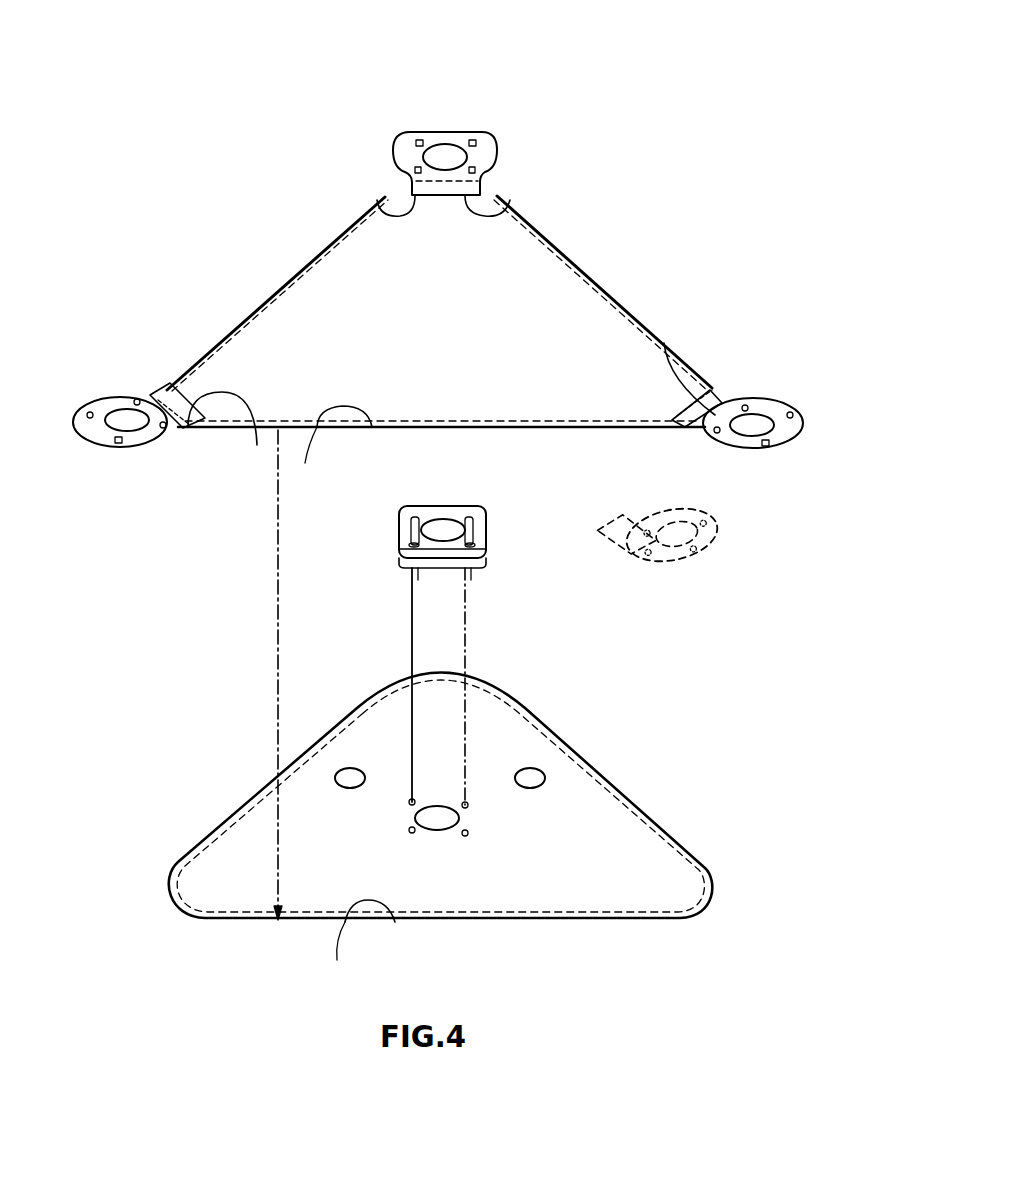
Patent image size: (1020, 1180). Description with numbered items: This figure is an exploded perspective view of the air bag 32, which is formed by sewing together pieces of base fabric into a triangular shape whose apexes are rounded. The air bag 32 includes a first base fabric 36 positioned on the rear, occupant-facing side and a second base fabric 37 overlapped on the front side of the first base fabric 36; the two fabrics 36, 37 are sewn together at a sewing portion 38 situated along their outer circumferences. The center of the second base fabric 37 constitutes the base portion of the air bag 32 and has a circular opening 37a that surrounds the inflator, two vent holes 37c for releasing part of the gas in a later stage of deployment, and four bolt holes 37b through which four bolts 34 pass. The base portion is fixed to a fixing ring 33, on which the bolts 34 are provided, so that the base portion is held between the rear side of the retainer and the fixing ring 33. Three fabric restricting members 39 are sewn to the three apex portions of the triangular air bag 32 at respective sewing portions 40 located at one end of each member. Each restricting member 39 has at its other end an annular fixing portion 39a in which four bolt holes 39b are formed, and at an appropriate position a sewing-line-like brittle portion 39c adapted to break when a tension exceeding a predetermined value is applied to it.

The air bag 32 is at (622, 248).
The fixing ring 33 is at (445, 507).
The bolts 34 is at (413, 568).
The first base fabric 36 is at (320, 292).
The second base fabric 37 is at (222, 813).
The circular opening 37a is at (422, 830).
The bolt holes 37b is at (409, 802).
The vent holes 37c is at (350, 768).
The sewing portion 38 is at (346, 700).
The fabric restricting members 39 is at (433, 130).
The annular fixing portion 39a is at (447, 140).
The bolt holes 39b is at (415, 169).
The brittle portion 39c is at (378, 210).
The sewing portions 40 is at (513, 210).